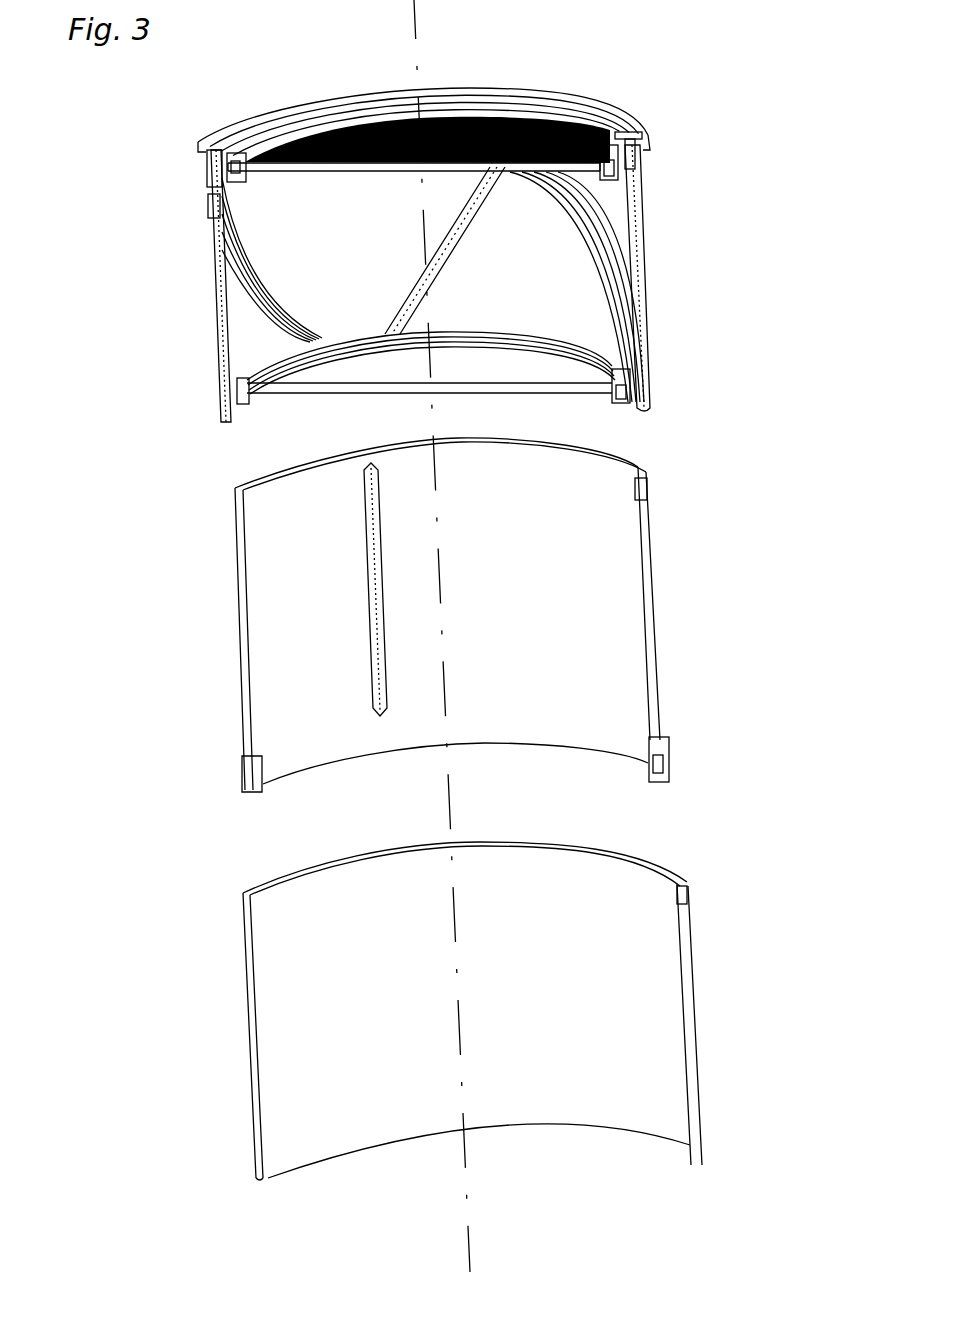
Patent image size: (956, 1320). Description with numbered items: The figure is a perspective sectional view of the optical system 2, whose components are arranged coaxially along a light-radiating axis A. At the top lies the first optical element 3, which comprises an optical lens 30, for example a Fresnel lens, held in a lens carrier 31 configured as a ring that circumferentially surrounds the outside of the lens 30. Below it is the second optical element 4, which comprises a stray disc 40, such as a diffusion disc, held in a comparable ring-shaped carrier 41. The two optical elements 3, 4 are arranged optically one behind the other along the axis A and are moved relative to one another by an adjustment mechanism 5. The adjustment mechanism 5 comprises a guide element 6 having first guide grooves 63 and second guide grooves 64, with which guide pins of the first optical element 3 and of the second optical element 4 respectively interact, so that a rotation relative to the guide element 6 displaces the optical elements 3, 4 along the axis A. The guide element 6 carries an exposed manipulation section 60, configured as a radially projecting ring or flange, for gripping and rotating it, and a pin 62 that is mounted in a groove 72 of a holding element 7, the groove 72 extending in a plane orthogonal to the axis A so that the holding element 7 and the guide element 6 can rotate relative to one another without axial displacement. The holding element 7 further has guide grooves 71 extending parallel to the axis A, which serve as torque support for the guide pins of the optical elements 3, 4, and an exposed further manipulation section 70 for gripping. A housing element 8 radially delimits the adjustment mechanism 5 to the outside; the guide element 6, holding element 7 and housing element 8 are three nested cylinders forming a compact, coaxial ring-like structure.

The optical system 2 is at (737, 68).
The first optical element 3 is at (424, 173).
The optical lens 30 is at (348, 172).
The lens carrier 31 is at (238, 176).
The second optical element 4 is at (433, 353).
The stray disc 40 is at (336, 396).
The carrier 41 is at (242, 400).
The adjustment mechanism 5 is at (712, 186).
The guide element 6 is at (217, 282).
The manipulation section 60 is at (648, 142).
The pin 62 is at (658, 272).
The first guide grooves 63 is at (205, 180).
The second guide grooves 64 is at (206, 220).
The holding element 7 is at (441, 615).
The further manipulation section 70 is at (670, 762).
The further guide grooves 71 is at (376, 566).
The groove 72 is at (245, 626).
The housing element 8 is at (696, 902).
The light-radiating axis A is at (478, 1248).